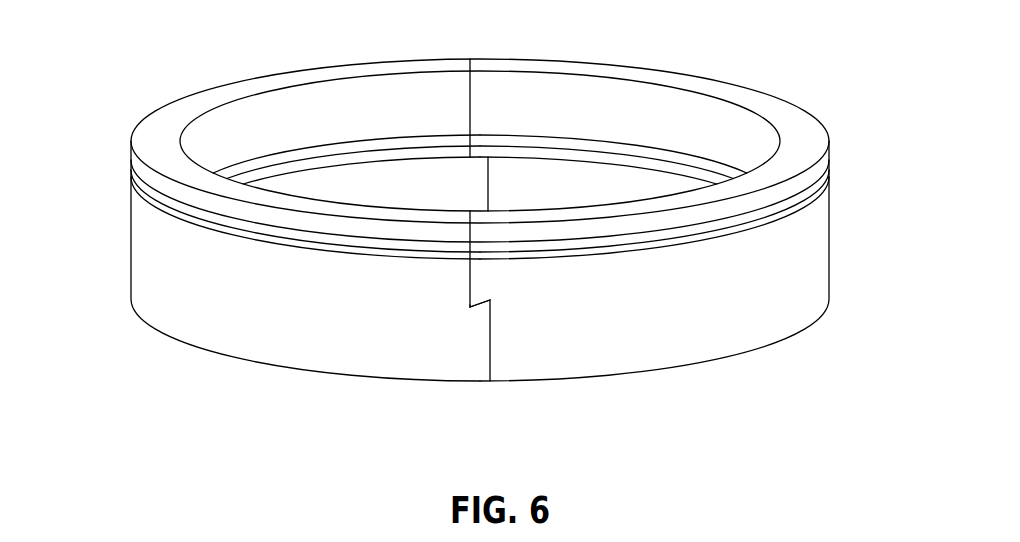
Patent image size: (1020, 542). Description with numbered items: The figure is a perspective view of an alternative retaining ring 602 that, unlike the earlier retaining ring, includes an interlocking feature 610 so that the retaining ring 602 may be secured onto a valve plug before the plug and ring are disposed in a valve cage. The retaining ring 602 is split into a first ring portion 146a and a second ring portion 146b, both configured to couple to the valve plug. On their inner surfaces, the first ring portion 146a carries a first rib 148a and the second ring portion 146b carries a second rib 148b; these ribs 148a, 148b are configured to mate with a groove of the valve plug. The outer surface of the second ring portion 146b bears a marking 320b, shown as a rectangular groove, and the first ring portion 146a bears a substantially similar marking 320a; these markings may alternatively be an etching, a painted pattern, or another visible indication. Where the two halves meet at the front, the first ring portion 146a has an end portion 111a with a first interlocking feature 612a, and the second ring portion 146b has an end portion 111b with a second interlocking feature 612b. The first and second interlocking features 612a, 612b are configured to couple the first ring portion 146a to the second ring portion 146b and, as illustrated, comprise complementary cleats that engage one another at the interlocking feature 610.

The retaining ring 602 is at (496, 241).
The interlocking feature 610 is at (502, 55).
The marking 320a is at (846, 168).
The marking 320b is at (131, 167).
The first rib 148a is at (605, 157).
The second rib 148b is at (375, 157).
The first ring portion 146a is at (812, 288).
The second ring portion 146b is at (155, 288).
The end portion 111a is at (473, 245).
The end portion 111b is at (487, 315).
The first interlocking feature 612a is at (482, 294).
The second interlocking feature 612b is at (483, 363).